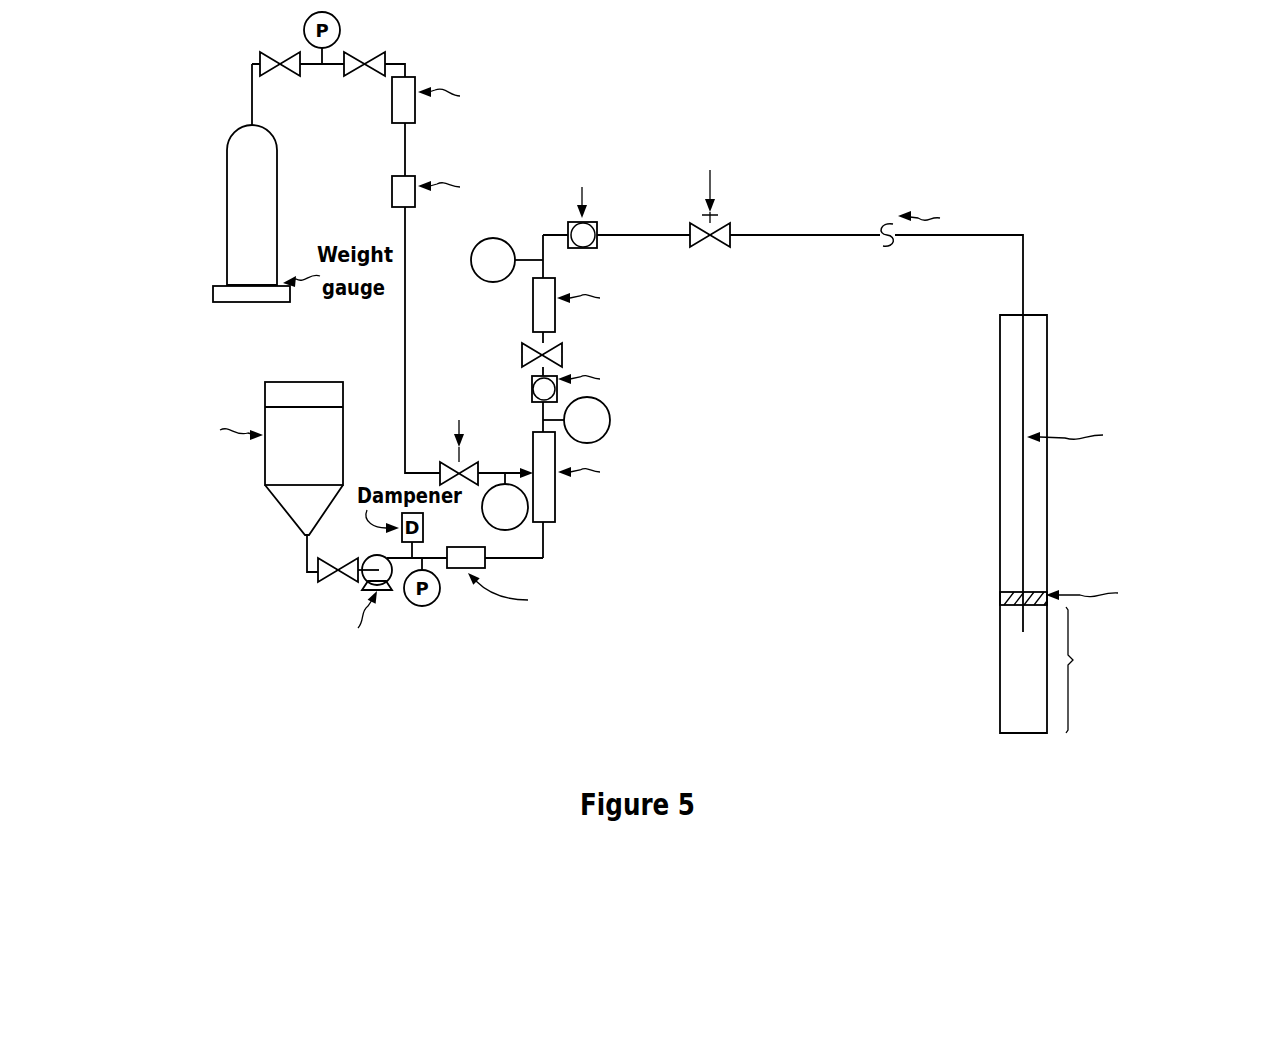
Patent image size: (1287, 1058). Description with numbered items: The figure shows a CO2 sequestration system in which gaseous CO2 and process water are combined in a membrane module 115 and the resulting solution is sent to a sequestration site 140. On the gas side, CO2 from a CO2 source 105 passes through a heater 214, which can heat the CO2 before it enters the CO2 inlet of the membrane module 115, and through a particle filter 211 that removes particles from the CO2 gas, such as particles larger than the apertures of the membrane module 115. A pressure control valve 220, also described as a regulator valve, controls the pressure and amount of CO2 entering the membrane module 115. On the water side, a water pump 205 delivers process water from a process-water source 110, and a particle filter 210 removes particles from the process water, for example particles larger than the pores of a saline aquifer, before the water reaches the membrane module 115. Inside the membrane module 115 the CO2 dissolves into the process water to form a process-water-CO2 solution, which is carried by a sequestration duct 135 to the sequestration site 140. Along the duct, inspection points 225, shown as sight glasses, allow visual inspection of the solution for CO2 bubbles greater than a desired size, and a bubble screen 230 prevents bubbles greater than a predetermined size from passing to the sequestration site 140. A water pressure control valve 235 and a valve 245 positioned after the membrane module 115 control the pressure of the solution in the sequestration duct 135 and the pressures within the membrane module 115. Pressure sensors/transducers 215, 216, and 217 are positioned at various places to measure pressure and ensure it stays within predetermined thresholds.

The CO2 source 105 is at (291, 213).
The process-water source 110 is at (250, 477).
The membrane module 115 is at (625, 484).
The sequestration duct 135 is at (852, 237).
The sequestration site 140 is at (994, 581).
The water pump 205 is at (373, 633).
The particle filter 210 is at (530, 604).
The particle filter 211 is at (467, 194).
The heater 214 is at (460, 114).
The pressure sensor/transducer 215 is at (497, 526).
The pressure sensor/transducer 216 is at (607, 412).
The pressure sensor/transducer 217 is at (475, 272).
The pressure control valve 220 is at (461, 401).
The inspection point 225 is at (626, 263).
The bubble screen 230 is at (633, 305).
The water pressure control valve 235 is at (563, 362).
The valve 245 is at (711, 169).